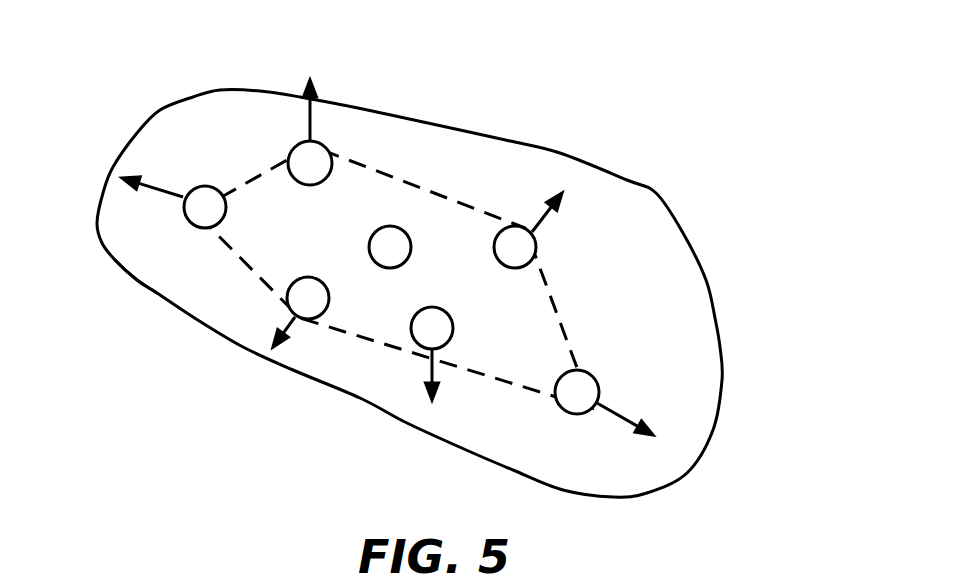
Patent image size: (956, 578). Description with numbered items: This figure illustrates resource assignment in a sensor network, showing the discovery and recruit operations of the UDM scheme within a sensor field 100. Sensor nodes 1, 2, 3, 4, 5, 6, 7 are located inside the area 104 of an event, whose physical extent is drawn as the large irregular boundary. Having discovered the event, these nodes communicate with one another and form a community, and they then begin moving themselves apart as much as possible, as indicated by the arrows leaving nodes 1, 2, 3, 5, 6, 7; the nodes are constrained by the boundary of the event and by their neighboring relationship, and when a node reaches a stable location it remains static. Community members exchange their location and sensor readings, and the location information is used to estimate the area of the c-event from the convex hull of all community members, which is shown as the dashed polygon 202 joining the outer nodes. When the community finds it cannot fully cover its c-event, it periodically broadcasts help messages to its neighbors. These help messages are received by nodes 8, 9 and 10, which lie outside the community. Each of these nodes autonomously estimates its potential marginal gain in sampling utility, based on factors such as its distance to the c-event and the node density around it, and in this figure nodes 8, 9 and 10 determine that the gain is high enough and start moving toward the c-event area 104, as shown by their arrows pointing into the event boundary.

The sensor node 1 is at (174, 202).
The sensor node 2 is at (310, 132).
The sensor node 3 is at (301, 312).
The sensor node 4 is at (390, 247).
The sensor node 5 is at (528, 230).
The sensor node 6 is at (432, 353).
The sensor node 7 is at (604, 402).
The node outside the community 8 is at (132, 72).
The node outside the community 9 is at (437, 96).
The node outside the community 10 is at (753, 195).
The sensor field 100 is at (153, 466).
The physical extent of the event 104 is at (157, 293).
The convex hull of the community 202 is at (567, 312).